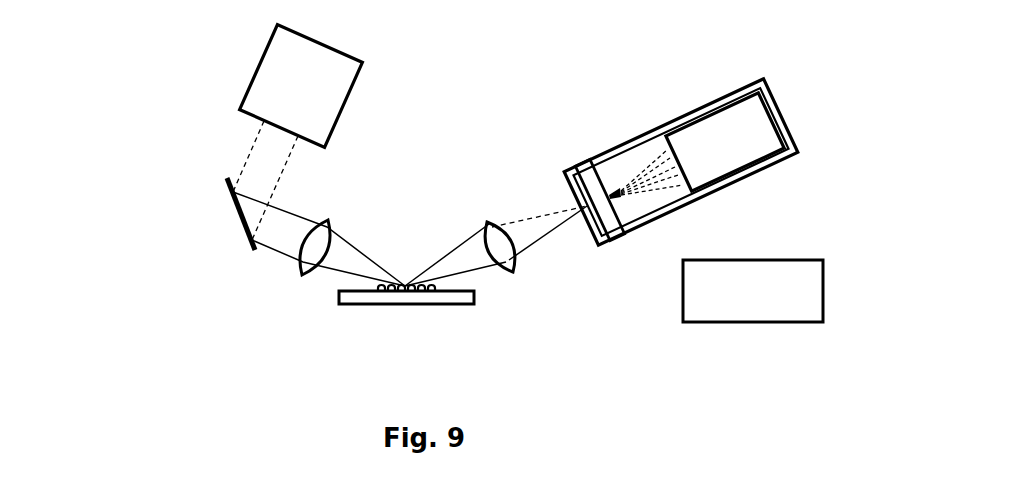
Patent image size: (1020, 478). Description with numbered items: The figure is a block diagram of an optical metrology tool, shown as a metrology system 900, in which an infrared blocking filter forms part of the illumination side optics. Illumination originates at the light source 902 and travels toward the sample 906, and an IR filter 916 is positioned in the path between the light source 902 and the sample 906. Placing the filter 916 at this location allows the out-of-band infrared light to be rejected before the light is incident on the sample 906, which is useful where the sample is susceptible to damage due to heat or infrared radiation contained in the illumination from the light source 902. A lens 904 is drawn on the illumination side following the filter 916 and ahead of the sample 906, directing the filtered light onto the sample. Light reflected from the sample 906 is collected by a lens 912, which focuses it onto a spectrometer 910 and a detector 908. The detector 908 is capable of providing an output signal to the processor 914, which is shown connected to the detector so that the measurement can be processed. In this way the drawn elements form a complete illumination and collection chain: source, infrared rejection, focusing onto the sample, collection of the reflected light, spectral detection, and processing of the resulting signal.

The metrology system 900 is at (87, 26).
The light source 902 is at (297, 132).
The lens 904 is at (302, 272).
The sample 906 is at (403, 307).
The detector 908 is at (775, 126).
The spectrometer 910 is at (566, 171).
The lens 912 is at (513, 267).
The processor 914 is at (713, 190).
The IR filter 916 is at (226, 184).